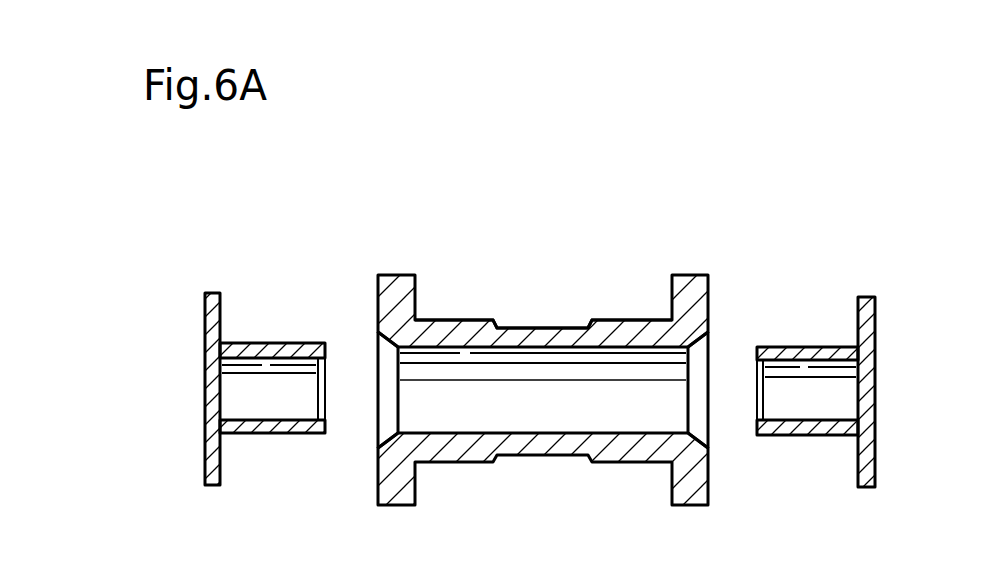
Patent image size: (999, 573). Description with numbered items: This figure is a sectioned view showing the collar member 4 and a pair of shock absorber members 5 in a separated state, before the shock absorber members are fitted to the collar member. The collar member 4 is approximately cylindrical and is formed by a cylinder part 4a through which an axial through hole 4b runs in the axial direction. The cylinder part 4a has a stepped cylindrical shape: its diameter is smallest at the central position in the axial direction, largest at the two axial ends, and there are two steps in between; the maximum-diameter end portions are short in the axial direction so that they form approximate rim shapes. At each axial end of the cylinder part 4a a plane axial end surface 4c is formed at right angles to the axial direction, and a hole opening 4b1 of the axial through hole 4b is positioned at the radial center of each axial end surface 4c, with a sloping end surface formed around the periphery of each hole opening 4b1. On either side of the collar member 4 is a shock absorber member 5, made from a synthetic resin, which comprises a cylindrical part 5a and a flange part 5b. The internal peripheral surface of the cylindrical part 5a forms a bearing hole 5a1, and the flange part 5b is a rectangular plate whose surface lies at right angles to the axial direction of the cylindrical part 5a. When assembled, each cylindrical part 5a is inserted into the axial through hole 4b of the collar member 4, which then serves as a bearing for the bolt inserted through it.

The collar member 4 is at (557, 386).
The cylinder part 4a is at (472, 320).
The axial through hole 4b is at (551, 405).
The hole opening 4b1 is at (557, 446).
The axial end surface 4c is at (378, 303).
The shock absorber member 5 is at (542, 384).
The cylindrical part 5a is at (300, 343).
The bearing hole 5a1 is at (905, 385).
The flange part 5b is at (205, 453).